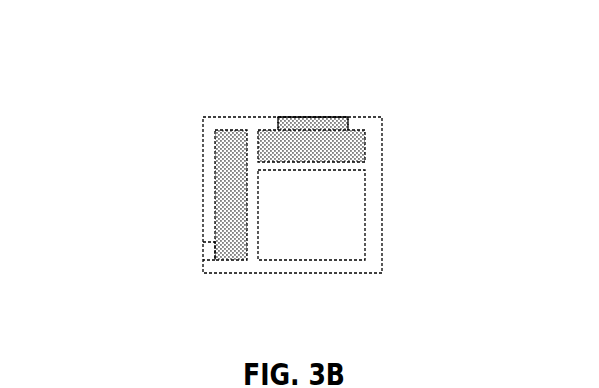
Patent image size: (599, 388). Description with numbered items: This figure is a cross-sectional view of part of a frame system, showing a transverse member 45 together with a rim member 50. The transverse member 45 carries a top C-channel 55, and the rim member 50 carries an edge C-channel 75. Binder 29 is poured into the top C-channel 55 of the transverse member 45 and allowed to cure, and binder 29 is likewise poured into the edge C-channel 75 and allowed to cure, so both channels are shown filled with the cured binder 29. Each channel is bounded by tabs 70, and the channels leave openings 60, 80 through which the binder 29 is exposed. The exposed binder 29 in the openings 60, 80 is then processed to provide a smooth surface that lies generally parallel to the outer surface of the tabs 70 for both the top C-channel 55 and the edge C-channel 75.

The binder 29 is at (345, 143).
The transverse member 45 is at (402, 247).
The rim member 50 is at (167, 272).
The top C-channel 55 is at (372, 150).
The opening 60 is at (302, 128).
The tabs 70 is at (262, 125).
The edge C-channel 75 is at (214, 268).
The opening 80 is at (212, 197).